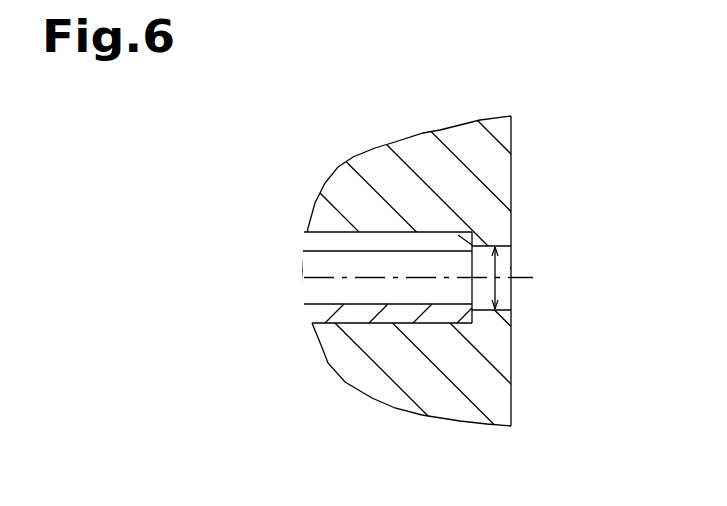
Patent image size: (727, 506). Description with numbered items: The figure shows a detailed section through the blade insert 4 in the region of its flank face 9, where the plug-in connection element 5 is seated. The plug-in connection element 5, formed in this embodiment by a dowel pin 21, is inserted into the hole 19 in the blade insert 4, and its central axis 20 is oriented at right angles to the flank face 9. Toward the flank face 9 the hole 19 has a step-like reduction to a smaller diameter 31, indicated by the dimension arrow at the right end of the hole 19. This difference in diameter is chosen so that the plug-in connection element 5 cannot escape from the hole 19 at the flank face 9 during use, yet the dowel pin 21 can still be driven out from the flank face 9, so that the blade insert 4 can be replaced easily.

The blade insert 4 is at (340, 185).
The plug-in connection element 5 is at (317, 232).
The dowel pin 21 is at (307, 262).
The central axis 20 is at (297, 277).
The hole 19 is at (315, 311).
The smaller diameter 31 is at (499, 270).
The flank face 9 is at (512, 360).